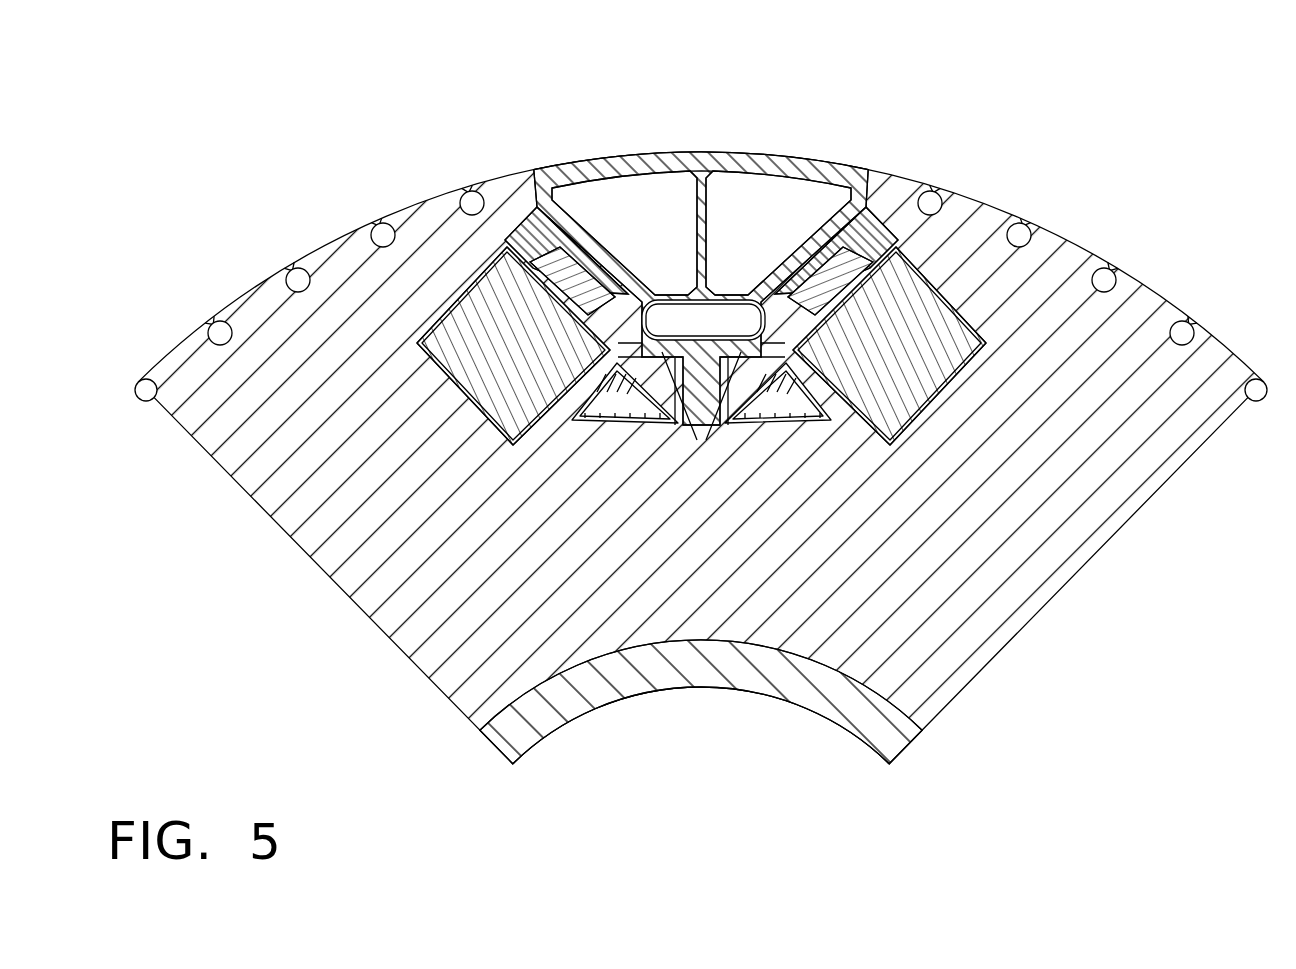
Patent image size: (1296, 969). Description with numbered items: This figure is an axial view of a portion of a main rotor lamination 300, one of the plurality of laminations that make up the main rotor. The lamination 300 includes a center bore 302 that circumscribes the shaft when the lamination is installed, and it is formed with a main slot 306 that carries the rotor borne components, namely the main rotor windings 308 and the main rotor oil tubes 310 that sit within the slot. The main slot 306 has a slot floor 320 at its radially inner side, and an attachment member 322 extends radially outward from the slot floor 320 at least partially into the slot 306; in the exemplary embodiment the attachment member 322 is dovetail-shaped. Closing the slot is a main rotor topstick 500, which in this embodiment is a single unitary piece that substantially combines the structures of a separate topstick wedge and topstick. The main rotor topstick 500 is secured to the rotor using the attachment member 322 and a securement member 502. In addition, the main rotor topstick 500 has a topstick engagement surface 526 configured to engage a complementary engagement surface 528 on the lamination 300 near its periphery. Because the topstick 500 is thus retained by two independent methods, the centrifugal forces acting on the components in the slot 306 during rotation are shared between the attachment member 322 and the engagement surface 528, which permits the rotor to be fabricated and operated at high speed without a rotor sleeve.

The main rotor lamination 300 is at (1020, 108).
The center bore 302 is at (1027, 228).
The main slot 306 is at (853, 155).
The main rotor windings 308 is at (558, 389).
The main rotor oil tubes 310 is at (642, 418).
The slot floor 320 is at (812, 440).
The attachment member 322 is at (680, 332).
The main rotor topstick 500 is at (737, 153).
The securement member 502 is at (702, 436).
The topstick engagement surface 526 is at (850, 222).
The complementary engagement surface 528 is at (897, 243).